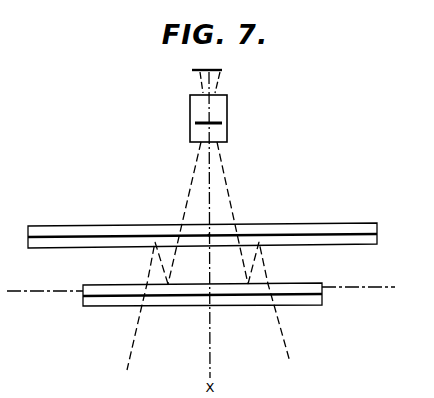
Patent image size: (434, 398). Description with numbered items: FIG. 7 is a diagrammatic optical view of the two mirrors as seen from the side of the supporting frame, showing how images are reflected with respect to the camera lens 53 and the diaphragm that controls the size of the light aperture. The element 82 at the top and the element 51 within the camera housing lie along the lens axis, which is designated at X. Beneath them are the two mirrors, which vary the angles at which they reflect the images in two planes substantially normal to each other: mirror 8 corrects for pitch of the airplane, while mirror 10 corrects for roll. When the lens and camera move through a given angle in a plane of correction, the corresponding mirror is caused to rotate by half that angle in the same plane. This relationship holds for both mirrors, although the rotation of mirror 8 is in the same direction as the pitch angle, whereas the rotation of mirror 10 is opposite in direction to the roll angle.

The light source 82 is at (203, 68).
The lens 53 is at (190, 108).
The slit 51 is at (222, 123).
The mirror 10 is at (330, 223).
The mirror 8 is at (97, 309).